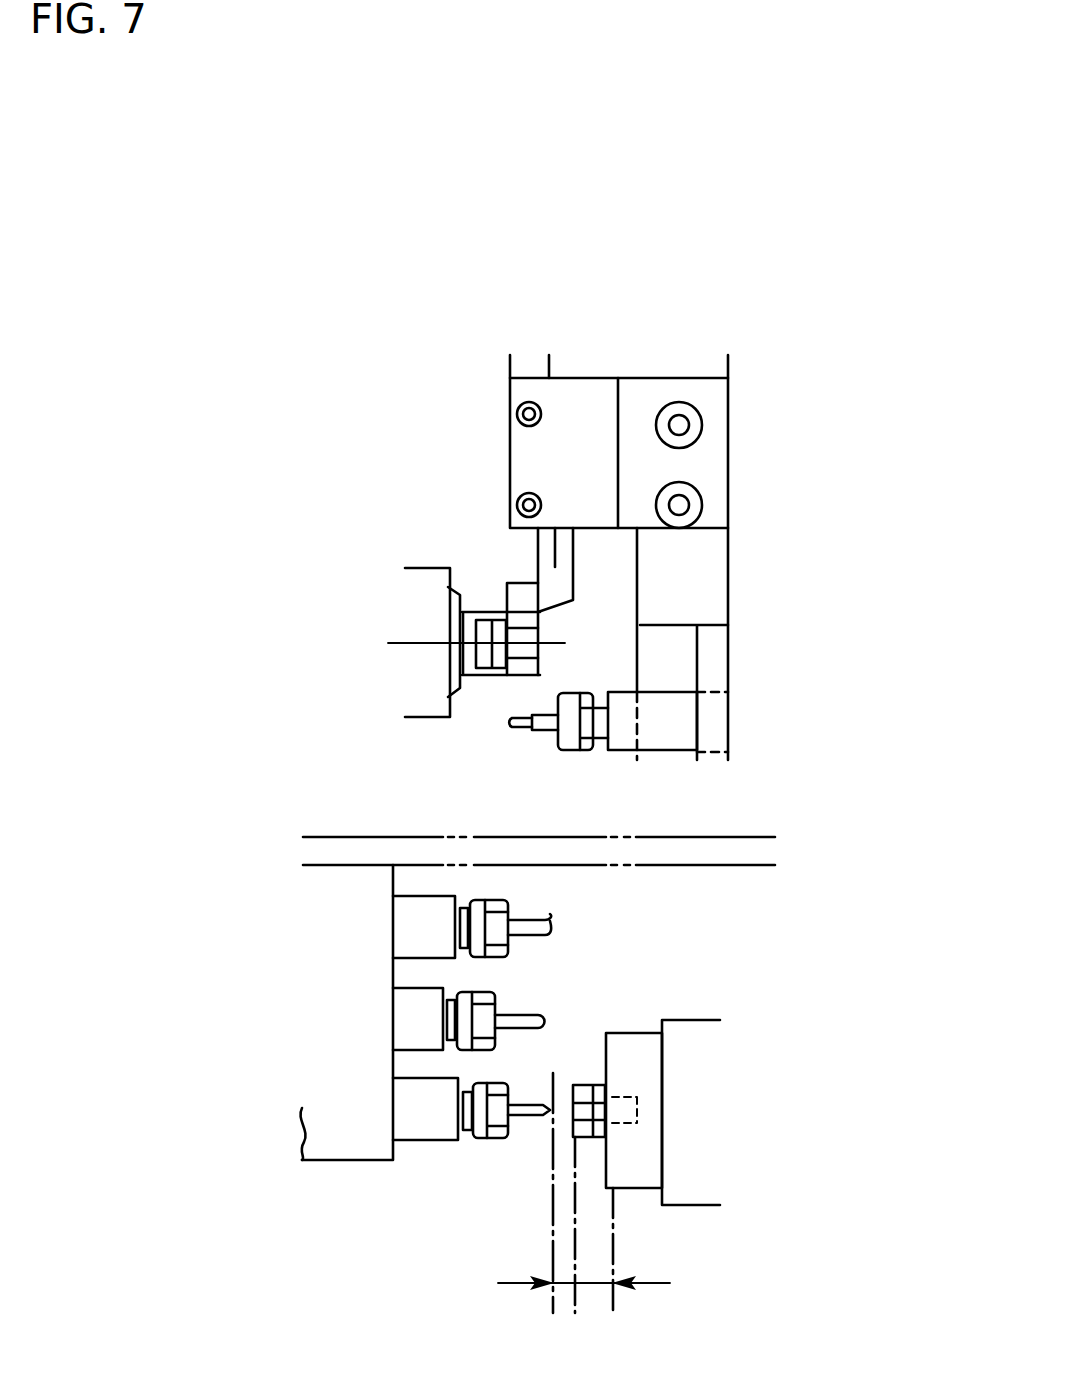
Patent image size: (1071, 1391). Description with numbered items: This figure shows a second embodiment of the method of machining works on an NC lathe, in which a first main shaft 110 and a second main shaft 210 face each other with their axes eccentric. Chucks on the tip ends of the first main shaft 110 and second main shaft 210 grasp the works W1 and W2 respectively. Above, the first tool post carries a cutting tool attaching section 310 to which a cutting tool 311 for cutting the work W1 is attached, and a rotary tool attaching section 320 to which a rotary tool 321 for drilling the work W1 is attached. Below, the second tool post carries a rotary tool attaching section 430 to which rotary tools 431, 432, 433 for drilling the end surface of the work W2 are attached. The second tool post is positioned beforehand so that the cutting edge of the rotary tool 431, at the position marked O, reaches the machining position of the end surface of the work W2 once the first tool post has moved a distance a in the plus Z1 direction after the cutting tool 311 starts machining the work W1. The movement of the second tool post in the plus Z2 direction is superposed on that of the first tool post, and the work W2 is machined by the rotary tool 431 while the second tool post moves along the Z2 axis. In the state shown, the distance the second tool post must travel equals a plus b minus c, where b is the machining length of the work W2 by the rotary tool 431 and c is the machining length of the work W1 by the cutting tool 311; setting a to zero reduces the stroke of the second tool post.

The first main shaft 110 is at (415, 563).
The cutting tool attaching section 310 is at (643, 373).
The cutting tool 311 is at (555, 537).
The rotary tool attaching section 320 is at (702, 648).
The rotary tool 321 is at (607, 722).
The second main shaft 210 is at (623, 1045).
The rotary tool attaching section 430 is at (355, 1165).
The rotary tool 431 is at (420, 1110).
The rotary tool 432 is at (410, 1022).
The rotary tool 433 is at (410, 932).
The work W1 is at (493, 680).
The work W2 is at (588, 1085).
The nozzle axis position O is at (528, 1130).
The distance a is at (560, 1287).
The machining length b is at (587, 1287).
The machining length c is at (520, 565).